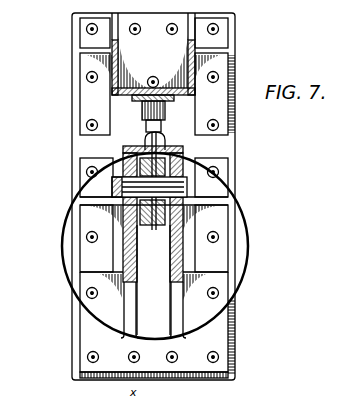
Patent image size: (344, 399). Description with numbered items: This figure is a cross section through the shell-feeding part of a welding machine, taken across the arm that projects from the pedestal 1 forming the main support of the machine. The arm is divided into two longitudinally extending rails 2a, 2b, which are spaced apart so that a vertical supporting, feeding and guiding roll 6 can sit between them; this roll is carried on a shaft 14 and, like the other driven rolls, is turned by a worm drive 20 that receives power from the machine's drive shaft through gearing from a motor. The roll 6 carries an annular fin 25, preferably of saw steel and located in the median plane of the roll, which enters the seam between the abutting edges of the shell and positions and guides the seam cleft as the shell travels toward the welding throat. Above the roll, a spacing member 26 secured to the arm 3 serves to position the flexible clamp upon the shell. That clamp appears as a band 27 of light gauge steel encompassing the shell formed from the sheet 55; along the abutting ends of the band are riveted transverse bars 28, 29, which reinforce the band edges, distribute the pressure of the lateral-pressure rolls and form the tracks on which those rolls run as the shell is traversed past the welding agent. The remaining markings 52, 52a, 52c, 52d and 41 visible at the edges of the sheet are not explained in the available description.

The pedestal 1 is at (78, 156).
The arm 3 is at (217, 62).
The transverse bar 28 is at (185, 157).
The spacing member 26 is at (126, 146).
The transverse bar 29 is at (123, 155).
The shaft 14 is at (190, 193).
The worm drive 20 is at (92, 205).
The vertical supporting, feeding and guiding roll 6 is at (186, 206).
The longitudinally extending rail 2b is at (123, 261).
The longitudinally extending rail 2a is at (184, 261).
The annular fin 25 is at (158, 224).
The sheet 55 is at (146, 343).
The band 27 is at (247, 277).
The partial numeral 52d is at (160, 390).
The partial numeral 52c is at (214, 388).
The partial numeral 41 is at (193, 394).
The partial numeral 52a is at (243, 394).
The partial numeral 52 is at (68, 395).